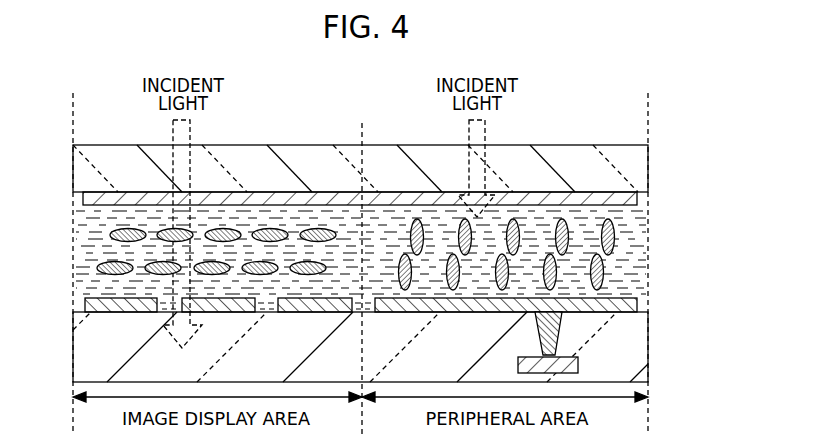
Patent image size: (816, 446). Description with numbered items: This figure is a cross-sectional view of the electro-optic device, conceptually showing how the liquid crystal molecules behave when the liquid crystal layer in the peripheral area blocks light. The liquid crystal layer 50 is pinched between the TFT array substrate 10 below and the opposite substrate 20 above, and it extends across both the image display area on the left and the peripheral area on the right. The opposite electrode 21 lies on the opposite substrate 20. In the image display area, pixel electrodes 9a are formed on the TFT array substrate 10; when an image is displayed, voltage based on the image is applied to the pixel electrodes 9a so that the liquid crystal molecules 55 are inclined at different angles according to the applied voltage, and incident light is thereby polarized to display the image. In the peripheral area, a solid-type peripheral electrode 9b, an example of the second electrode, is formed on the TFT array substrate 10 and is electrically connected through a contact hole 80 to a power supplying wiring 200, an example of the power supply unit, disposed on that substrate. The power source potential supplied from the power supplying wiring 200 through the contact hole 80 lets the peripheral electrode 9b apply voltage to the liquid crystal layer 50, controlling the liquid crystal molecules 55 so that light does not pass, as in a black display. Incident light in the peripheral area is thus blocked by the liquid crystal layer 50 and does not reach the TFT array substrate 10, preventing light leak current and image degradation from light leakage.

The opposite substrate 20 is at (645, 163).
The opposite electrode 21 is at (638, 198).
The liquid crystal layer 50 is at (645, 245).
The liquid crystal molecules 55 is at (272, 229).
The pixel electrode 9a is at (117, 312).
The peripheral electrode 9b is at (640, 306).
The TFT array substrate 10 is at (645, 357).
The contact hole 80 is at (560, 326).
The power supplying wiring 200 is at (520, 360).